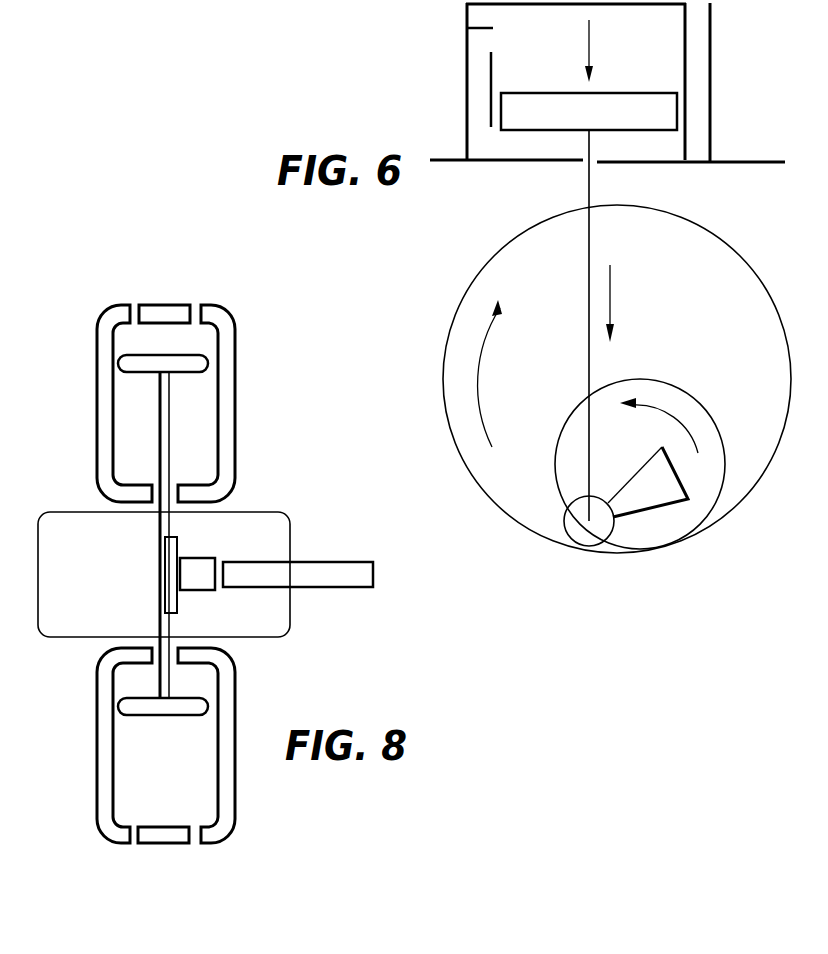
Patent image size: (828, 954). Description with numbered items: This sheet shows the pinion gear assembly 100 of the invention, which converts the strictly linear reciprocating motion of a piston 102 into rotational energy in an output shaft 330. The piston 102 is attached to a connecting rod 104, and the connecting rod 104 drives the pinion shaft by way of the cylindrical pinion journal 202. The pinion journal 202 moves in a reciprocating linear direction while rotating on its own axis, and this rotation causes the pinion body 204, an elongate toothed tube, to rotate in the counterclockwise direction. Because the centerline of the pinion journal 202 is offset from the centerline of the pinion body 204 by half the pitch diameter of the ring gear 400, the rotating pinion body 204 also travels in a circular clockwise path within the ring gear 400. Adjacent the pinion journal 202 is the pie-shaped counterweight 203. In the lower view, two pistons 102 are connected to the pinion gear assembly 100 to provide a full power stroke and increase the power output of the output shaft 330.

In FIG. 6, the piston 102 is at (641, 92).
In FIG. 8, the piston 102 is at (200, 363).
In FIG. 6, the connecting rod 104 is at (590, 187).
In FIG. 6, the ring gear 400 is at (493, 257).
In FIG. 6, the pinion body 204 is at (569, 418).
In FIG. 6, the counterweight 203 is at (641, 483).
In FIG. 6, the pinion journal 202 is at (583, 529).
In FIG. 8, the pinion gear assembly 100 is at (230, 546).
In FIG. 8, the output shaft 330 is at (340, 562).